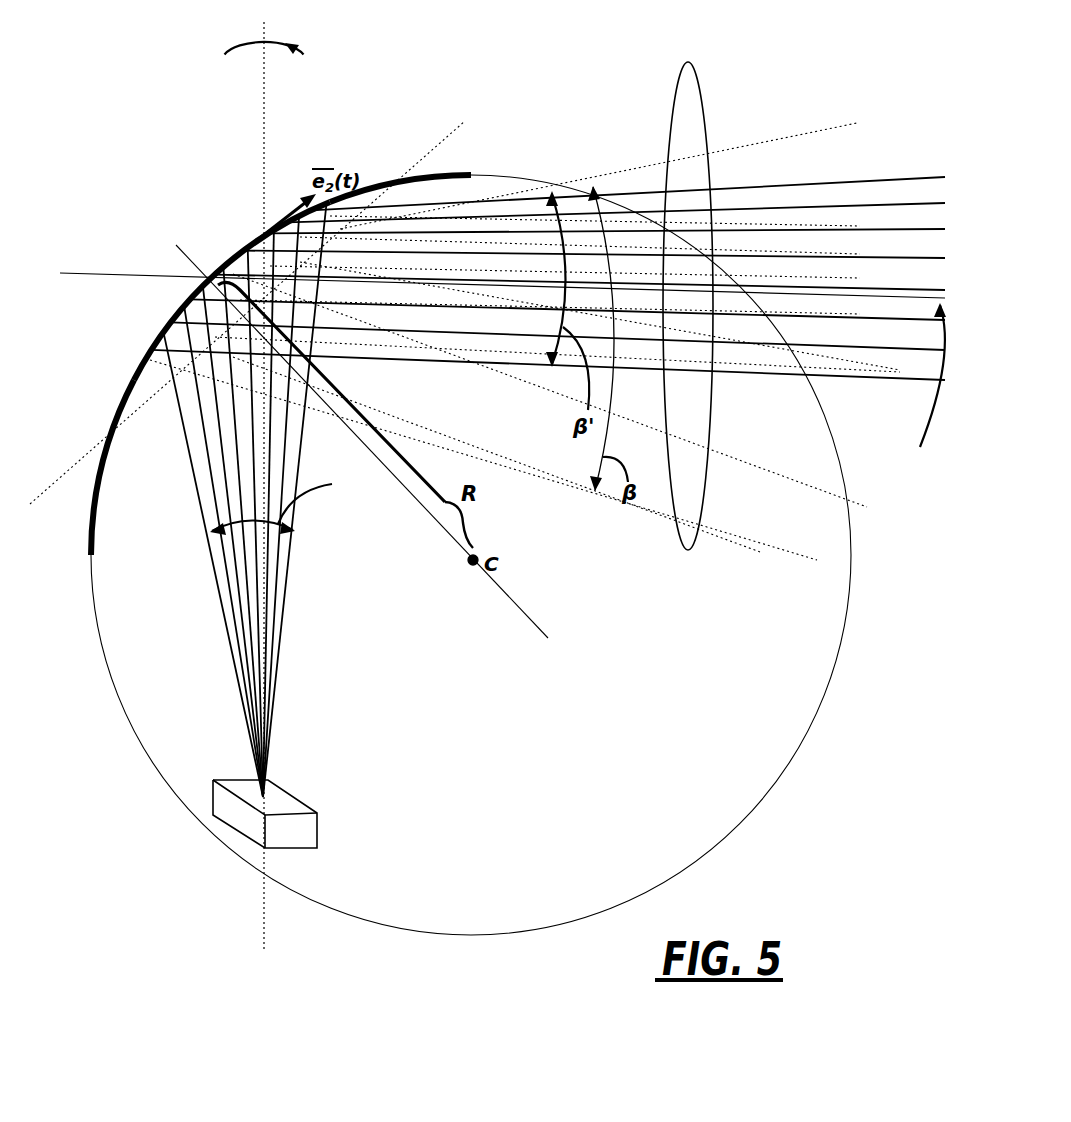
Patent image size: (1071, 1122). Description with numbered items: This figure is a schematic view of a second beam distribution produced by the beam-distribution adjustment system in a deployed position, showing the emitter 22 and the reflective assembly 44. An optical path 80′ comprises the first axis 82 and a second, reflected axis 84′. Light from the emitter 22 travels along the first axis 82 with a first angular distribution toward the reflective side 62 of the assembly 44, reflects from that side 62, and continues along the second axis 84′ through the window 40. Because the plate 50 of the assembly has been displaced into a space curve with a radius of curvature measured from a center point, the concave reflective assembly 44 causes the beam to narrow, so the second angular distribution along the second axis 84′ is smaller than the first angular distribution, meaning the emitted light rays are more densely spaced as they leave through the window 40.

The emitter 22 is at (250, 778).
The window 40 is at (702, 90).
The reflective assembly 44 is at (113, 373).
The plate 50 is at (443, 177).
The reflective side 62 is at (110, 463).
The first axis 82 is at (268, 463).
The second axis 84′ is at (855, 298).
The optical path 80′ is at (925, 389).